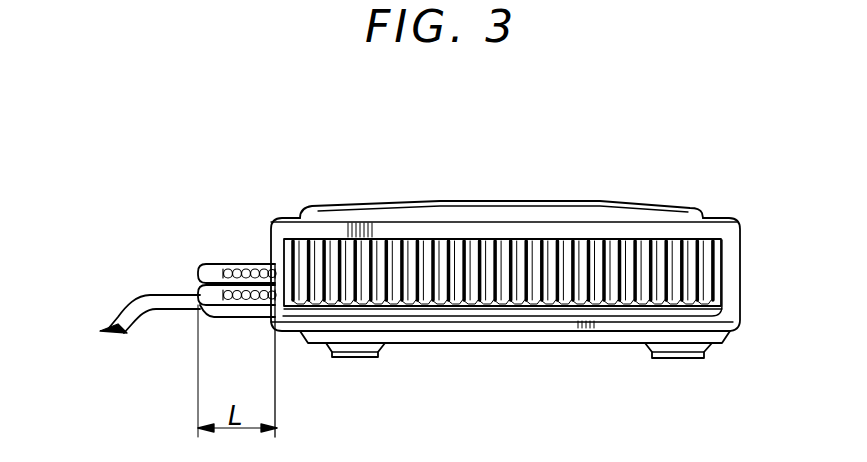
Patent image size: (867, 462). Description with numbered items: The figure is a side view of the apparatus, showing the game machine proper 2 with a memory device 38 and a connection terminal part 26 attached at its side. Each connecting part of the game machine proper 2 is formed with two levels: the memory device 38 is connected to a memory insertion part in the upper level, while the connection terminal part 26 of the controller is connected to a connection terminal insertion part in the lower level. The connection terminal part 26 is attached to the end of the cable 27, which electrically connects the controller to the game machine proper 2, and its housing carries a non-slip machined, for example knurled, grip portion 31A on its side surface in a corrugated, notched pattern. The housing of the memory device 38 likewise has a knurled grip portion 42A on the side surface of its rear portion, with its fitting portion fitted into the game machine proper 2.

The game machine proper 2 is at (593, 187).
The connection terminal part 26 is at (220, 318).
The cable 27 is at (143, 294).
The grip portion 31A is at (258, 318).
The memory device 38 is at (218, 263).
The grip portion 42A is at (243, 267).